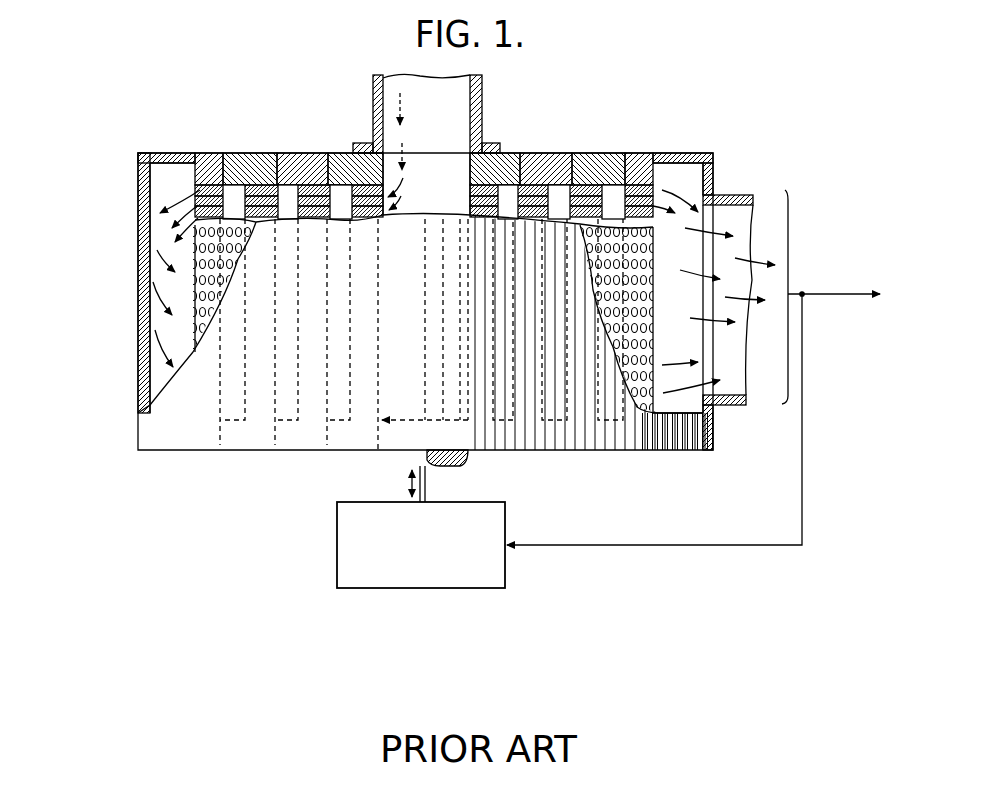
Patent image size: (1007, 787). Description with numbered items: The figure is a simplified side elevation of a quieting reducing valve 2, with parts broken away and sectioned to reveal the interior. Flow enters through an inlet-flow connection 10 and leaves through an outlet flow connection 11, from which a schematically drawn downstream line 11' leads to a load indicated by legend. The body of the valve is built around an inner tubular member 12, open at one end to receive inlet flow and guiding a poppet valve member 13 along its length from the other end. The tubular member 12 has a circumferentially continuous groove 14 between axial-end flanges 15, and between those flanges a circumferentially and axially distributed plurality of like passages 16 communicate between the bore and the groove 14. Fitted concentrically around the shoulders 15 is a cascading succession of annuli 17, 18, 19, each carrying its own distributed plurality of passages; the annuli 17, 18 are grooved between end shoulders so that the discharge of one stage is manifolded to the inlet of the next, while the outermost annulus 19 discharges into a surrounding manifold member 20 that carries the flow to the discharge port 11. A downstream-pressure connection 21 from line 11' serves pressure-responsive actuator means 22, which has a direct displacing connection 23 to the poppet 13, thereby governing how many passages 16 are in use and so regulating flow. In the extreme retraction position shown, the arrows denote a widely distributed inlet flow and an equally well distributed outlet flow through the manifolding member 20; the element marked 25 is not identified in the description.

The reducing valve 2 is at (112, 323).
The inlet-flow connection 10 is at (373, 86).
The outlet flow connection 11 is at (731, 284).
The downstream line 11' is at (831, 297).
The inner tubular member 12 is at (513, 151).
The poppet valve member 13 is at (378, 450).
The circumferentially continuous groove 14 is at (341, 218).
The axial-end flanges 15 is at (358, 150).
The passages 16 is at (372, 204).
The annulus 17 is at (304, 151).
The annulus 18 is at (251, 151).
The outermost annulus 19 is at (210, 151).
The manifold member 20 is at (166, 152).
The downstream-pressure connection 21 is at (689, 546).
The pressure-responsive actuator means 22 is at (506, 584).
The direct displacing connection 23 is at (427, 483).
The seat ring 25 is at (625, 151).